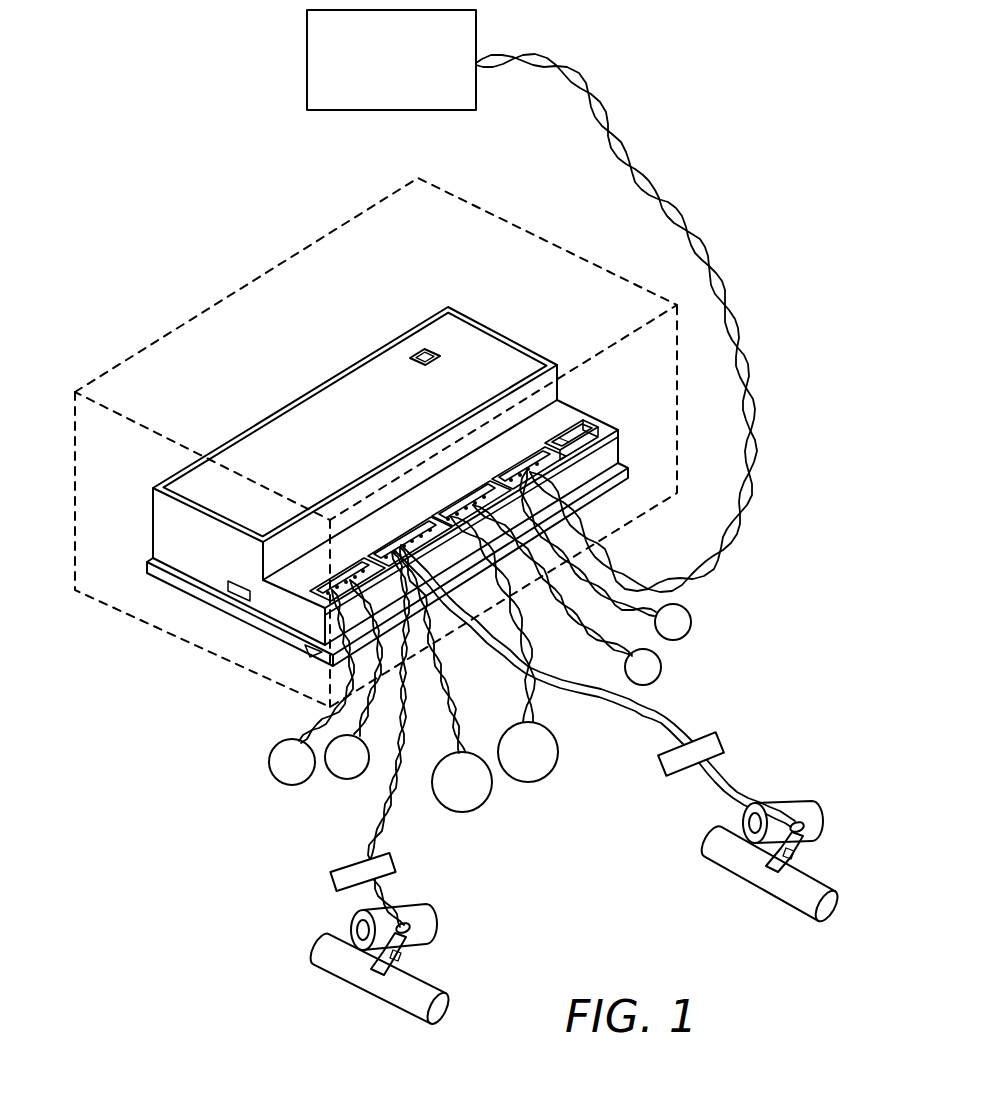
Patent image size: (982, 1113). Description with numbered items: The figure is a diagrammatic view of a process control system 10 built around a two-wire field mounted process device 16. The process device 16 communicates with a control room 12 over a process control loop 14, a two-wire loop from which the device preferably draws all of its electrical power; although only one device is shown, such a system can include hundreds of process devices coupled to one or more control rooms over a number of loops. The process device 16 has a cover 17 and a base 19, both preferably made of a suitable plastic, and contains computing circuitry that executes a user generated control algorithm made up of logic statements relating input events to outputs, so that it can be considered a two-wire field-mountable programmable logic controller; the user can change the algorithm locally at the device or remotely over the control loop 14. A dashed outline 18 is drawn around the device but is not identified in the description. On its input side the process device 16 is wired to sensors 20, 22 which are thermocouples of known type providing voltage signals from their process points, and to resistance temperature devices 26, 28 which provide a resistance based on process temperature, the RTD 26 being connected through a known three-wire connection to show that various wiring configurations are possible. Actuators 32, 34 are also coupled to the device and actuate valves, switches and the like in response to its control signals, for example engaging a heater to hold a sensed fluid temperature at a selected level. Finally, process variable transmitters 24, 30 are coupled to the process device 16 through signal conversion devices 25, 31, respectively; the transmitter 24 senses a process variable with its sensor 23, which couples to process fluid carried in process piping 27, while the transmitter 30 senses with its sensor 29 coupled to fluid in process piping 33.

The process control system 10 is at (343, 442).
The control room 12 is at (449, 99).
The process control loop 14 is at (688, 198).
The process device 16 is at (361, 486).
The cover 17 is at (262, 420).
The enclosure 18 is at (73, 543).
The base 19 is at (173, 588).
The sensor 20 is at (272, 745).
The sensor 22 is at (345, 780).
The sensor 23 is at (410, 962).
The process variable transmitter 24 is at (425, 910).
The signal conversion device 25 is at (332, 878).
The resistance temperature device 26 is at (488, 800).
The process piping 27 is at (400, 985).
The resistance temperature device 28 is at (557, 742).
The sensor 29 is at (800, 857).
The process variable transmitter 30 is at (810, 803).
The signal conversion device 31 is at (713, 733).
The actuator 32 is at (661, 663).
The process piping 33 is at (775, 890).
The actuator 34 is at (690, 612).